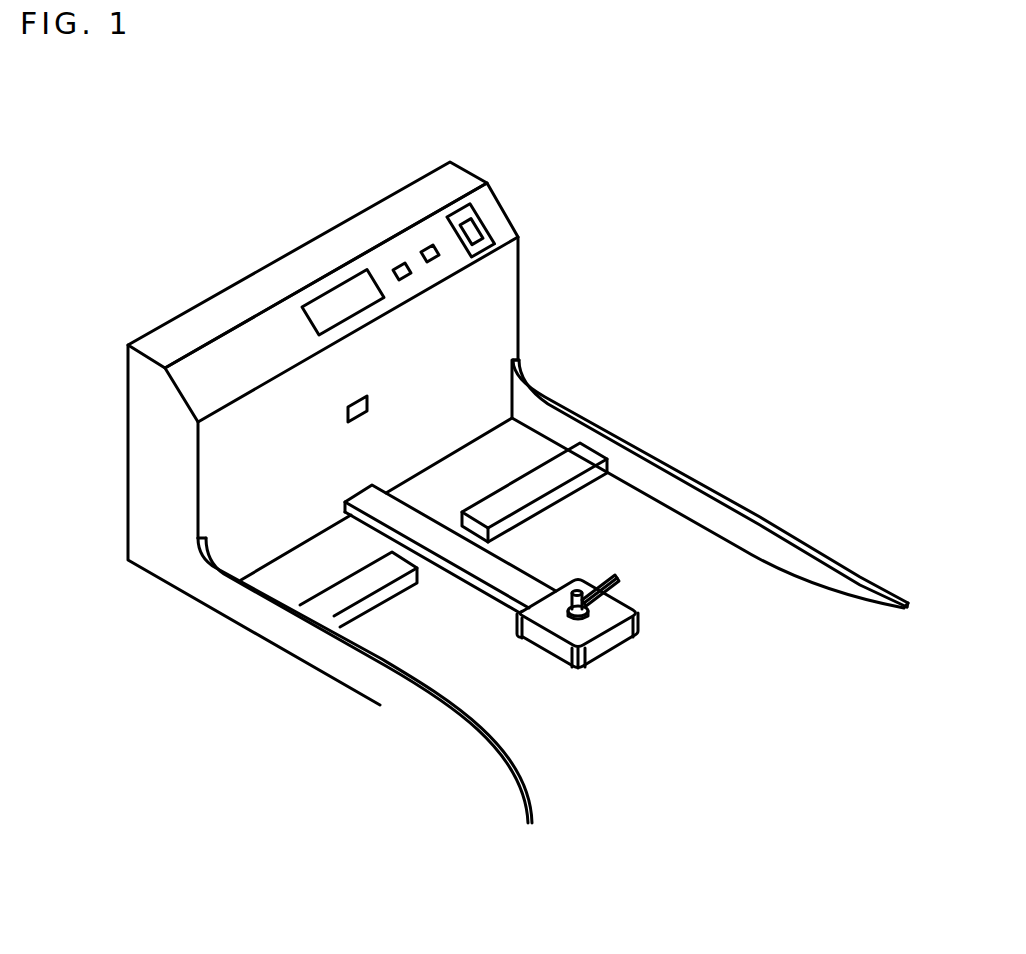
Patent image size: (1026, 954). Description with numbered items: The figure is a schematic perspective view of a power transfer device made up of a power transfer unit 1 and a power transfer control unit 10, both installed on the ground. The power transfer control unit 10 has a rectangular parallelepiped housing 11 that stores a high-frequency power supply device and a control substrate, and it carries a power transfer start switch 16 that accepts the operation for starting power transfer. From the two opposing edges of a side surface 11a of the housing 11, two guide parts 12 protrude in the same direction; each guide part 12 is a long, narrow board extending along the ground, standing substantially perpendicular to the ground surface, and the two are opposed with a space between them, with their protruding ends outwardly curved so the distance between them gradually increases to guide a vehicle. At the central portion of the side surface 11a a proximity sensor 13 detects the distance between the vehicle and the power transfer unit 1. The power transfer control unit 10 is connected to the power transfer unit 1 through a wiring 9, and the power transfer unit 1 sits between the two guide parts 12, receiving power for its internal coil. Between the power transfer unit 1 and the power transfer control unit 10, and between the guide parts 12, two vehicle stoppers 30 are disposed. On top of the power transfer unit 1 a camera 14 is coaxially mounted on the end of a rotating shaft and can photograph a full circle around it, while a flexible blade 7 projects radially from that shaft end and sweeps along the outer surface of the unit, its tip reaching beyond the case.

The power transfer unit 1 is at (621, 659).
The blade 7 is at (607, 576).
The wiring 9 is at (537, 587).
The power transfer control unit 10 is at (394, 189).
The housing 11 is at (146, 417).
The side surface 11a is at (488, 285).
The guide part 12 is at (713, 495).
The proximity sensor 13 is at (353, 421).
The camera 14 is at (596, 600).
The power transfer start switch 16 is at (475, 224).
The vehicle stopper 30 is at (583, 457).